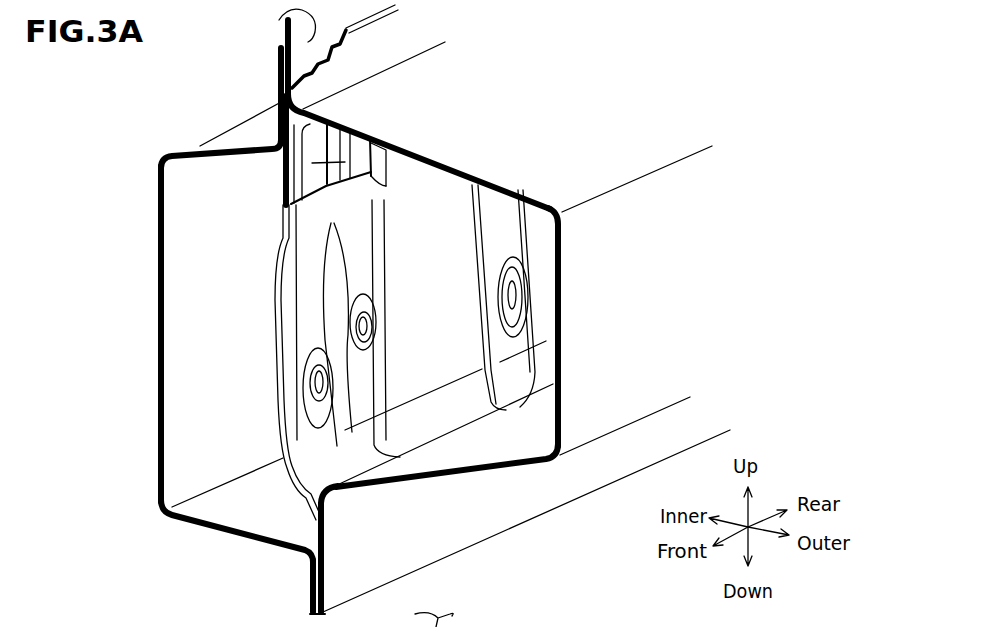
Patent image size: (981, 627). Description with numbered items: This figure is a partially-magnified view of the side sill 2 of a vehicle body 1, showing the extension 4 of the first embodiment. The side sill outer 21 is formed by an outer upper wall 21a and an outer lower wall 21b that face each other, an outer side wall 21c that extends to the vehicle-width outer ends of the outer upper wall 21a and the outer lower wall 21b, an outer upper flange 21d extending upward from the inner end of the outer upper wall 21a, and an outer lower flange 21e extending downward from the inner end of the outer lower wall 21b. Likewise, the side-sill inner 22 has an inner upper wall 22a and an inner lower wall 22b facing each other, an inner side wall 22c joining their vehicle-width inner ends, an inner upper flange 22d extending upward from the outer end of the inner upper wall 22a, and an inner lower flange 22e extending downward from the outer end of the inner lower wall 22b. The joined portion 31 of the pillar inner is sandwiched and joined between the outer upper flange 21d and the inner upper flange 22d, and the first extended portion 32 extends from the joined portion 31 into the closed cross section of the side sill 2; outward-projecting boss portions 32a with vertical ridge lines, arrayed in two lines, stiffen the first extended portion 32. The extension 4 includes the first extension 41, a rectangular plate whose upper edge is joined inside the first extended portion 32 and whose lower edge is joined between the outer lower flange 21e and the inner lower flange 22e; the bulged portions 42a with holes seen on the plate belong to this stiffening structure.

The vehicle side body structure 1 is at (478, 32).
The side sill 2 is at (431, 309).
The side sill outer 21 is at (760, 30).
The outer upper wall 21a is at (597, 121).
The outer lower wall 21b is at (387, 527).
The outer side wall 21c is at (673, 218).
The outer upper flange 21d is at (367, 53).
The outer lower flange 21e is at (480, 547).
The side-sill inner 22 is at (106, 114).
The inner upper wall 22a is at (167, 160).
The inner lower wall 22b is at (200, 528).
The inner side wall 22c is at (160, 390).
The inner upper flange 22d is at (282, 80).
The inner lower flange 22e is at (310, 577).
The joined portion 31 is at (279, 21).
The first extended portion 32 is at (336, 180).
The boss portion 32a is at (370, 165).
The extension 4 is at (412, 352).
The first extension 41 is at (278, 322).
The bulged portion with hole 42a is at (347, 382).